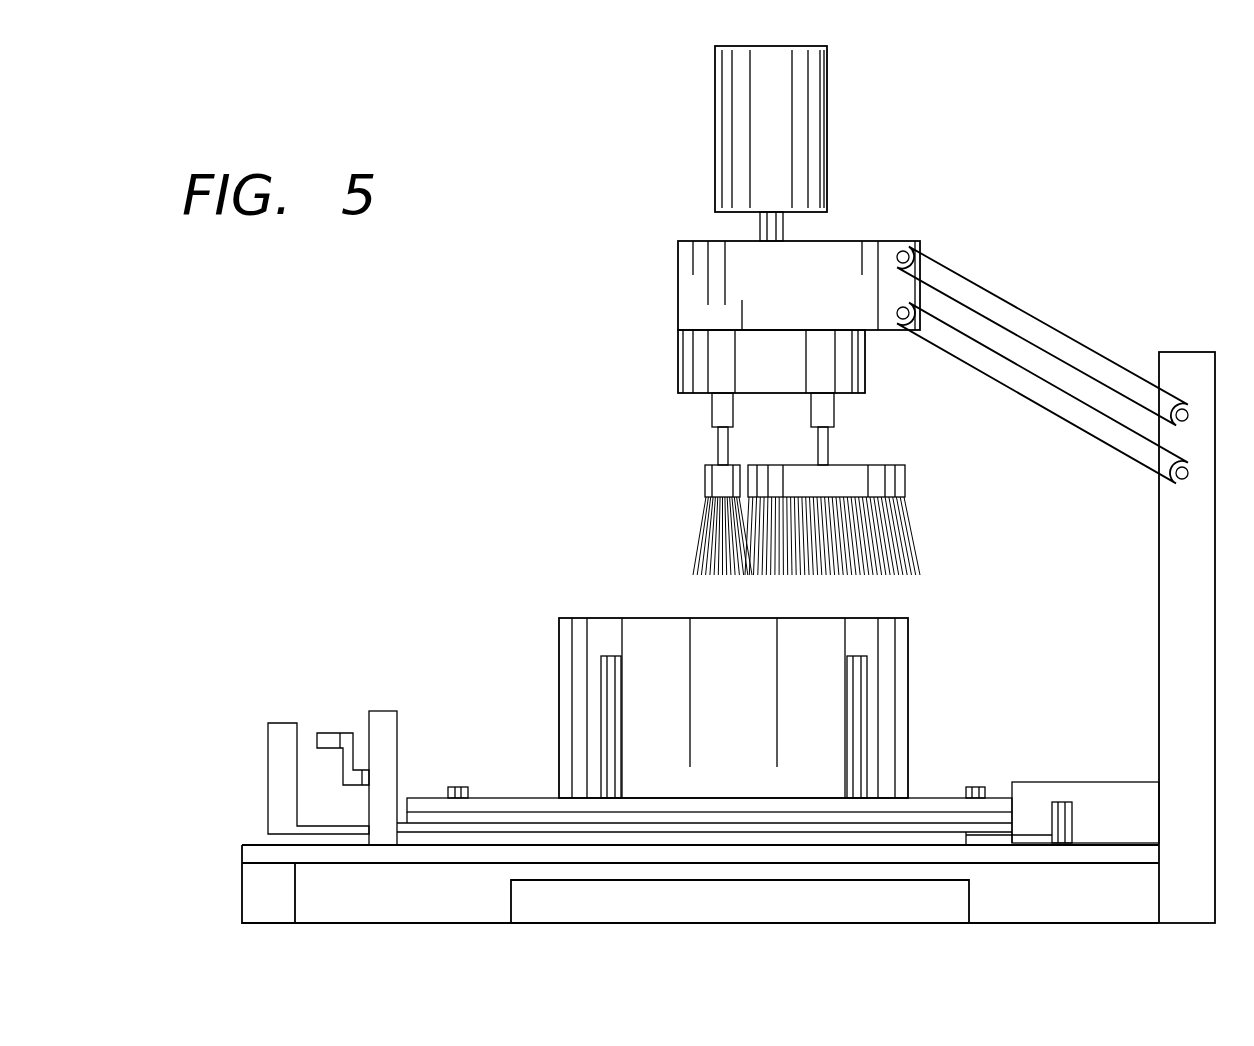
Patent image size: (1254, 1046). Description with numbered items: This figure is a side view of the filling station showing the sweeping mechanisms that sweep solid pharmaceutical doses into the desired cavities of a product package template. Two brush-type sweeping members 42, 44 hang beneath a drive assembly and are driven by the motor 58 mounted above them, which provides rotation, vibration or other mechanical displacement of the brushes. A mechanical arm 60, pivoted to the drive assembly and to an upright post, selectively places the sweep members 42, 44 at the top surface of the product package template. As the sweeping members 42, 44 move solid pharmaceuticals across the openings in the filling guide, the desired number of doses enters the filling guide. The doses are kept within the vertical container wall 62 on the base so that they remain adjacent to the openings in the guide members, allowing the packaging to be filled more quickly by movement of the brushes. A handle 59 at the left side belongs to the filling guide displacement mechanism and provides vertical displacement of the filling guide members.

The sweeping member 42 is at (713, 482).
The sweeping member 44 is at (887, 482).
The motor 58 is at (818, 128).
The handle 59 is at (388, 749).
The mechanical arm 60 is at (1057, 348).
The vertical container wall 62 is at (578, 643).